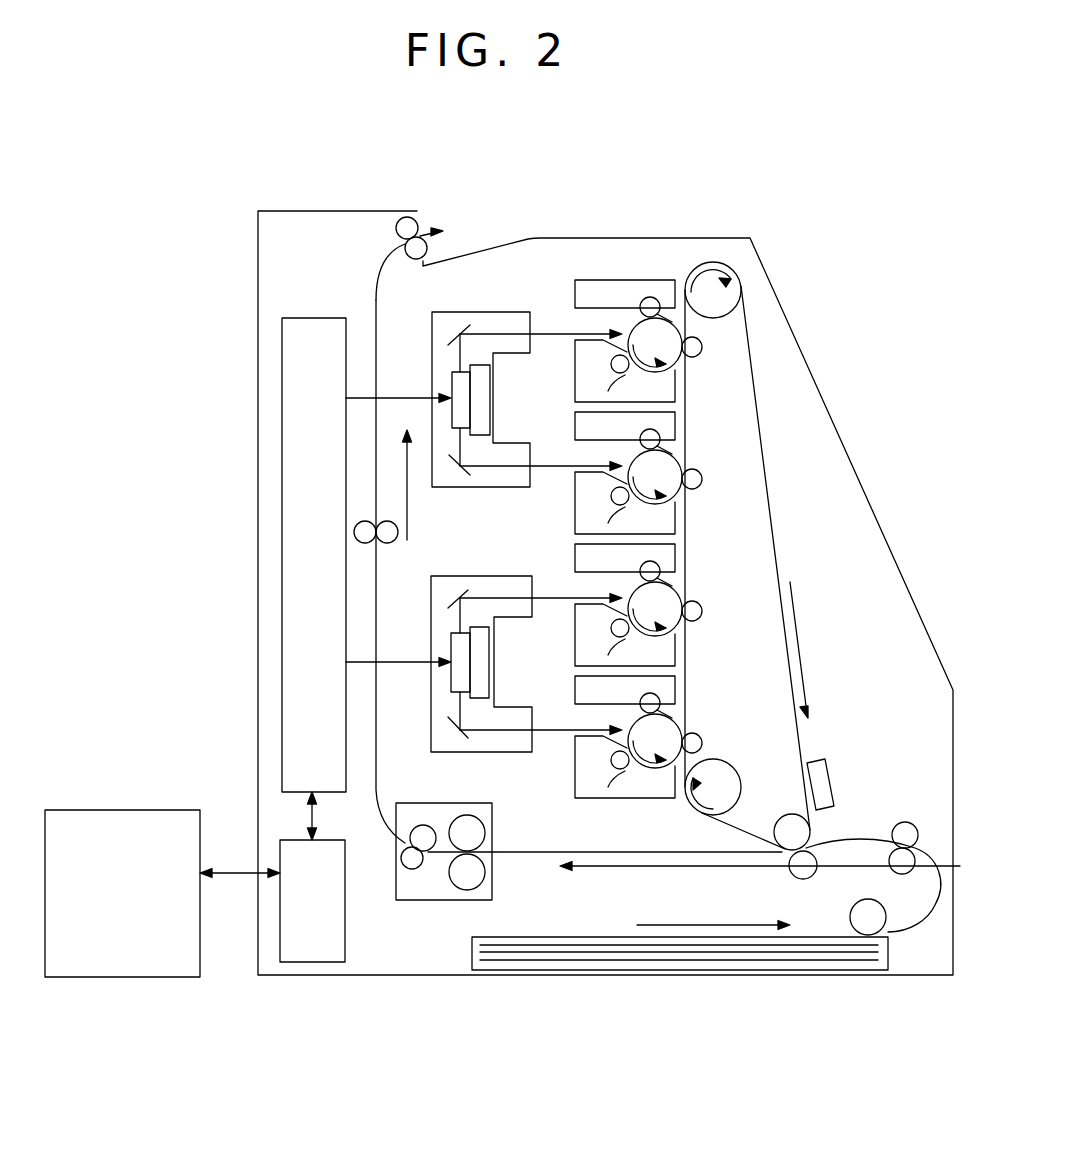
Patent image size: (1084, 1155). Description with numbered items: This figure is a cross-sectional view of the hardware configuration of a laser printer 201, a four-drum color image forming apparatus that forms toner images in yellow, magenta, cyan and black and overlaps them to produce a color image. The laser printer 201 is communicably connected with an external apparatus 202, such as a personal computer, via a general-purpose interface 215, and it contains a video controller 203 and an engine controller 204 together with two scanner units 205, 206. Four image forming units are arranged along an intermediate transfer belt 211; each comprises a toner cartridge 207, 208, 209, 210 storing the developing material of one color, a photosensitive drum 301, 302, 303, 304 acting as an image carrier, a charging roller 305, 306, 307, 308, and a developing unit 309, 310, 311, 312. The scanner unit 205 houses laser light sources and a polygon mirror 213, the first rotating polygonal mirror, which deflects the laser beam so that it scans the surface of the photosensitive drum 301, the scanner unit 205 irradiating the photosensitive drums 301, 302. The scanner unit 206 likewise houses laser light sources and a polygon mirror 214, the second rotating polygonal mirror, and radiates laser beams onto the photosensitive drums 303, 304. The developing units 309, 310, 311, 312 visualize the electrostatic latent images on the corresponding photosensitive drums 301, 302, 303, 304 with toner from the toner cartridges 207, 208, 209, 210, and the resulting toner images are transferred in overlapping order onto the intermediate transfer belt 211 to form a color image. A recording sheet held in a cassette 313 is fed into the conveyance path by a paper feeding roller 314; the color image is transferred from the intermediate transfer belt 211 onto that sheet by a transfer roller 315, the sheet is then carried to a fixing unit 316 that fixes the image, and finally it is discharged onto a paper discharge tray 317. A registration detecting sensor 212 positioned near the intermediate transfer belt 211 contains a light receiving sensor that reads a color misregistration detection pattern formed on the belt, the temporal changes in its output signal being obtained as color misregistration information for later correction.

The laser printer 201 is at (818, 384).
The external apparatus 202 is at (128, 977).
The video controller 203 is at (312, 962).
The engine controller 204 is at (297, 398).
The scanner unit 205 is at (460, 576).
The scanner unit 206 is at (483, 488).
The toner cartridge 207 is at (575, 688).
The toner cartridge 208 is at (575, 556).
The toner cartridge 209 is at (575, 424).
The toner cartridge 210 is at (575, 300).
The intermediate transfer belt 211 is at (778, 546).
The registration detecting sensor 212 is at (826, 768).
The polygon mirror 213 is at (452, 698).
The polygon mirror 214 is at (453, 372).
The general-purpose interface 215 is at (234, 875).
The photosensitive drum 301 is at (673, 720).
The photosensitive drum 302 is at (673, 590).
The photosensitive drum 303 is at (673, 458).
The photosensitive drum 304 is at (667, 352).
The charging roller 305 is at (653, 705).
The charging roller 306 is at (653, 573).
The charging roller 307 is at (653, 441).
The charging roller 308 is at (652, 297).
The developing unit 309 is at (611, 763).
The developing unit 310 is at (611, 631).
The developing unit 311 is at (611, 499).
The developing unit 312 is at (611, 367).
The cassette 313 is at (777, 963).
The paper feeding roller 314 is at (890, 920).
The transfer roller 315 is at (808, 835).
The fixing unit 316 is at (492, 820).
The paper discharge tray 317 is at (520, 238).